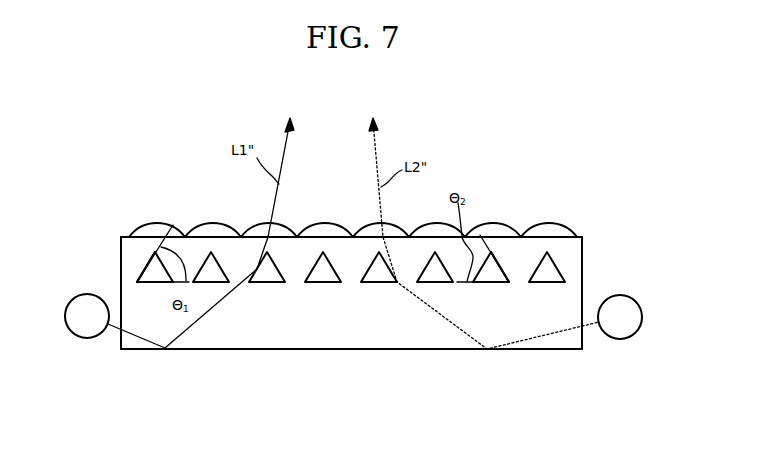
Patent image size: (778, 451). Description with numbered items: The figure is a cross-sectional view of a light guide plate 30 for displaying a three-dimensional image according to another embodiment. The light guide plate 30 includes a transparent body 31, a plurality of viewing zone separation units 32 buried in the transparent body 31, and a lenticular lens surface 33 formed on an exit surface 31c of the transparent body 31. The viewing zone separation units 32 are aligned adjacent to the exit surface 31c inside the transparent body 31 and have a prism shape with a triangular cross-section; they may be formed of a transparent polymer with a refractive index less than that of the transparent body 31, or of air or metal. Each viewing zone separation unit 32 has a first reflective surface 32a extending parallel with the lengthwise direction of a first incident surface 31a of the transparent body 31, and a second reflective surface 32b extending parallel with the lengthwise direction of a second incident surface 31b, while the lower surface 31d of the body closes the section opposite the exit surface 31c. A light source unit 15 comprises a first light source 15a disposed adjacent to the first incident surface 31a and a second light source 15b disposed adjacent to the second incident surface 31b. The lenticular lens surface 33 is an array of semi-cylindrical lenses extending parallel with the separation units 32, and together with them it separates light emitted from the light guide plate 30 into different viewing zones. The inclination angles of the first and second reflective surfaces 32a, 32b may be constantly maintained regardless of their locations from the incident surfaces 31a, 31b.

The light guide plate 30 is at (593, 198).
The transparent body 31 is at (584, 260).
The first incident surface 31a is at (121, 271).
The second incident surface 31b is at (583, 270).
The exit surface 31c is at (128, 237).
The lower surface of light guide plate 31d is at (442, 350).
The viewing zone separation unit 32 is at (214, 253).
The first reflective surface 32a is at (192, 292).
The second reflective surface 32b is at (501, 261).
The lenticular lens surface 33 is at (322, 224).
The light source unit 15 is at (637, 344).
The first light source 15a is at (643, 318).
The second light source 15b is at (74, 335).